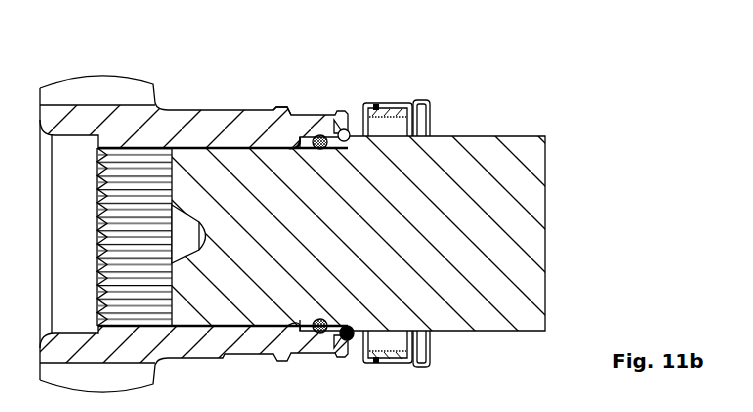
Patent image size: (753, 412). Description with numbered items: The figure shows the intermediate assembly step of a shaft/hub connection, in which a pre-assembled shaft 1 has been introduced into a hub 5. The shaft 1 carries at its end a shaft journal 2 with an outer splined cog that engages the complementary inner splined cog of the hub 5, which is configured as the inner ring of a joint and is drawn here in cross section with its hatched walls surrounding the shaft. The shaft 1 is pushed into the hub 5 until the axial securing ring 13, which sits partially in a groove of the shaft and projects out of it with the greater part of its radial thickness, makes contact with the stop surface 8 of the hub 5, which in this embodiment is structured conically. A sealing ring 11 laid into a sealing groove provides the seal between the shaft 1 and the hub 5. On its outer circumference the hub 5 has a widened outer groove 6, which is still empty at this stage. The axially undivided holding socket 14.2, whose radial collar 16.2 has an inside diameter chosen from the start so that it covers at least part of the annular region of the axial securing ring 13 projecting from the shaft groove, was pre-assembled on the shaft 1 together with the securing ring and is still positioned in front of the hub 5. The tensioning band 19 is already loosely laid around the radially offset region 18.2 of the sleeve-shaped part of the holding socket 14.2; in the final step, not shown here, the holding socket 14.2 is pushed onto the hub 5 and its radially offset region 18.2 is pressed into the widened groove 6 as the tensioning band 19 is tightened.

The shaft 1 is at (483, 183).
The shaft journal 2 is at (205, 185).
The hub 5 is at (250, 130).
The widened outer groove 6 is at (300, 112).
The stop surface 8 is at (333, 149).
The sealing ring 11 is at (318, 130).
The axial securing ring 13 is at (349, 141).
The holding socket 14.2 is at (433, 94).
The radial collar 16.2 is at (430, 125).
The radially offset region 18.2 is at (378, 107).
The tensioning band 19 is at (395, 106).